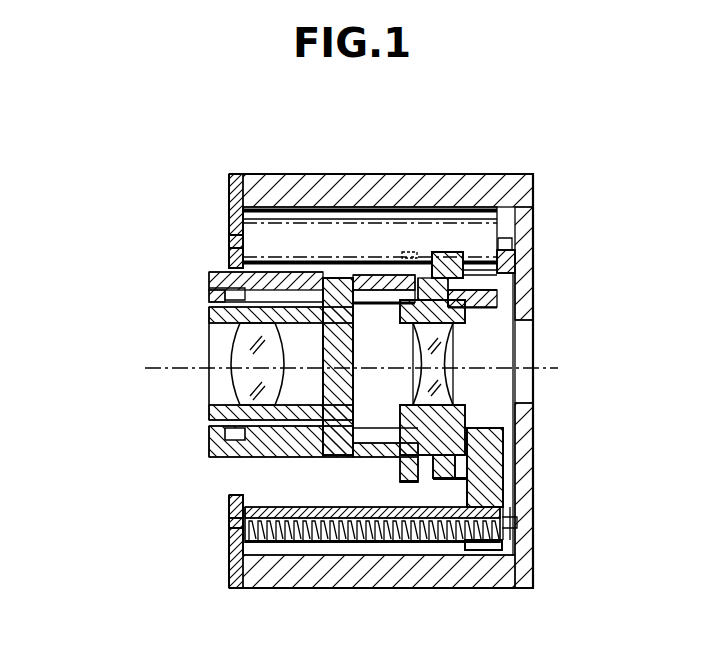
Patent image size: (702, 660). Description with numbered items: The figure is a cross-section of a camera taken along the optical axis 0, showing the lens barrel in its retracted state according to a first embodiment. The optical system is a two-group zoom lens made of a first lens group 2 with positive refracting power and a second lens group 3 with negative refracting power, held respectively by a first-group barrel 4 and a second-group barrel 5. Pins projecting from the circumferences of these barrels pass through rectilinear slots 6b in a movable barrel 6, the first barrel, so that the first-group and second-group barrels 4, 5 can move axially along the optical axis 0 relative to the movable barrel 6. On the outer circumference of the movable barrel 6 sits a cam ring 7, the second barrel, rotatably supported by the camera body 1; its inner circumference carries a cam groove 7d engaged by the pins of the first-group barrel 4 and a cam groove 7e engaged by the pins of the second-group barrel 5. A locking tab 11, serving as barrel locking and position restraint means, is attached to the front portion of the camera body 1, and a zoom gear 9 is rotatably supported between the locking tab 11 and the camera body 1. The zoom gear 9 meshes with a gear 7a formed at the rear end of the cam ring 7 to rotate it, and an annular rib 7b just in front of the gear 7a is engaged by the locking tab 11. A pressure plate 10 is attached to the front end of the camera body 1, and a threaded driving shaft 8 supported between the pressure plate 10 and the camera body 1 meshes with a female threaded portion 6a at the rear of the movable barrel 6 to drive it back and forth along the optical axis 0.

The camera body 1 is at (435, 192).
The locking tab 11 is at (230, 190).
The pressure plate 10 is at (237, 568).
The zoom gear 9 is at (265, 232).
The cam ring 7 is at (208, 282).
The gear 7a is at (447, 254).
The annular rib 7b is at (403, 250).
The cam groove 7d is at (340, 276).
The cam groove 7e is at (515, 272).
The movable barrel 6 is at (210, 435).
The female threaded portion 6a is at (485, 507).
The rectilinear slots 6b is at (370, 300).
The first-group barrel 4 is at (208, 315).
The first lens group 2 is at (228, 375).
The optical axis 0 is at (168, 368).
The second-group barrel 5 is at (467, 415).
The second lens group 3 is at (513, 353).
The threaded driving shaft 8 is at (297, 507).